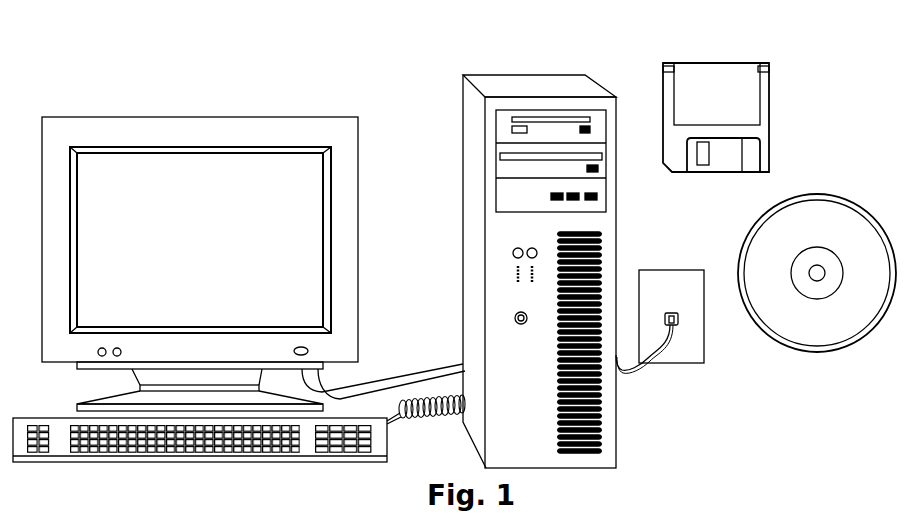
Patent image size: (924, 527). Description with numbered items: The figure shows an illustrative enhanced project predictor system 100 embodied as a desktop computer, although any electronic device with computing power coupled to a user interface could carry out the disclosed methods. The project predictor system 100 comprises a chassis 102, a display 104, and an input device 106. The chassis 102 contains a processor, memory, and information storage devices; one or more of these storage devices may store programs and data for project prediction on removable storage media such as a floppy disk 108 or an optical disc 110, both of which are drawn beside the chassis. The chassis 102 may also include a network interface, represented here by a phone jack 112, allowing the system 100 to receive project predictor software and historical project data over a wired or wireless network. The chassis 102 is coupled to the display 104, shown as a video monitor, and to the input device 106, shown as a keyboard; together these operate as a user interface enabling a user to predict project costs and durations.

The project predictor system 100 is at (628, 63).
The chassis 102 is at (462, 312).
The display 104 is at (62, 363).
The input device 106 is at (55, 462).
The floppy disk 108 is at (769, 148).
The optical disc 110 is at (832, 197).
The phone jack 112 is at (662, 270).